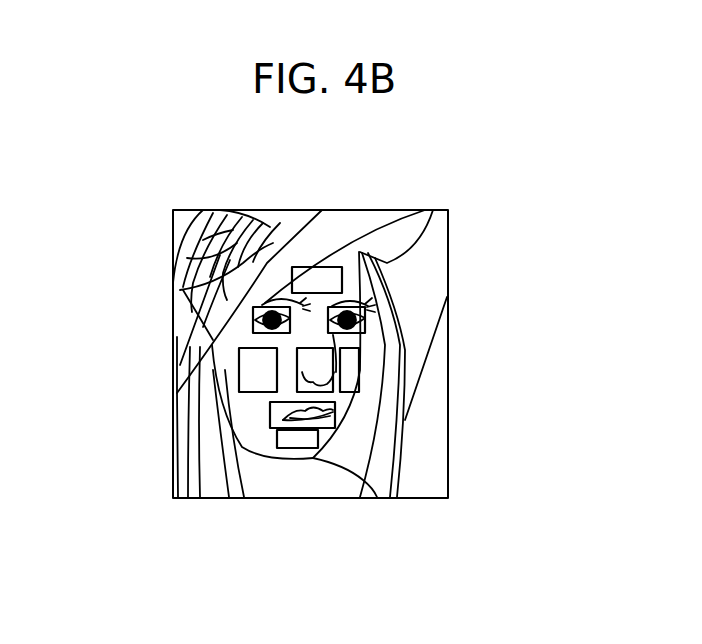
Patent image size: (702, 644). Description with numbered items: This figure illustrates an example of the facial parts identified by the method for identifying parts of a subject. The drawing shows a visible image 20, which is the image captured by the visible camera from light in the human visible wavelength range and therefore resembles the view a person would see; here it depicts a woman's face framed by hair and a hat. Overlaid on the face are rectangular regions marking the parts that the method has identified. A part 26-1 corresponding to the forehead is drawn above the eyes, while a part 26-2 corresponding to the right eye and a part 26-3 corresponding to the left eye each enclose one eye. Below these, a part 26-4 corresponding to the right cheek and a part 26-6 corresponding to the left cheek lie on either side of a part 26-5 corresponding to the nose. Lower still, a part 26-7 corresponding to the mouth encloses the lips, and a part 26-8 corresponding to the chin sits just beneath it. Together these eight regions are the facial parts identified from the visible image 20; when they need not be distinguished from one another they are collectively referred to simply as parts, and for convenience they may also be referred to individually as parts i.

The visible image 20 is at (450, 237).
The part corresponding to the forehead 26-1 is at (330, 267).
The part corresponding to the right eye 26-2 is at (253, 318).
The part corresponding to the left eye 26-3 is at (365, 320).
The part corresponding to the right cheek 26-4 is at (239, 370).
The part corresponding to the nose 26-5 is at (297, 378).
The part corresponding to the left cheek 26-6 is at (359, 363).
The part corresponding to the mouth 26-7 is at (270, 422).
The part corresponding to the chin 26-8 is at (300, 448).